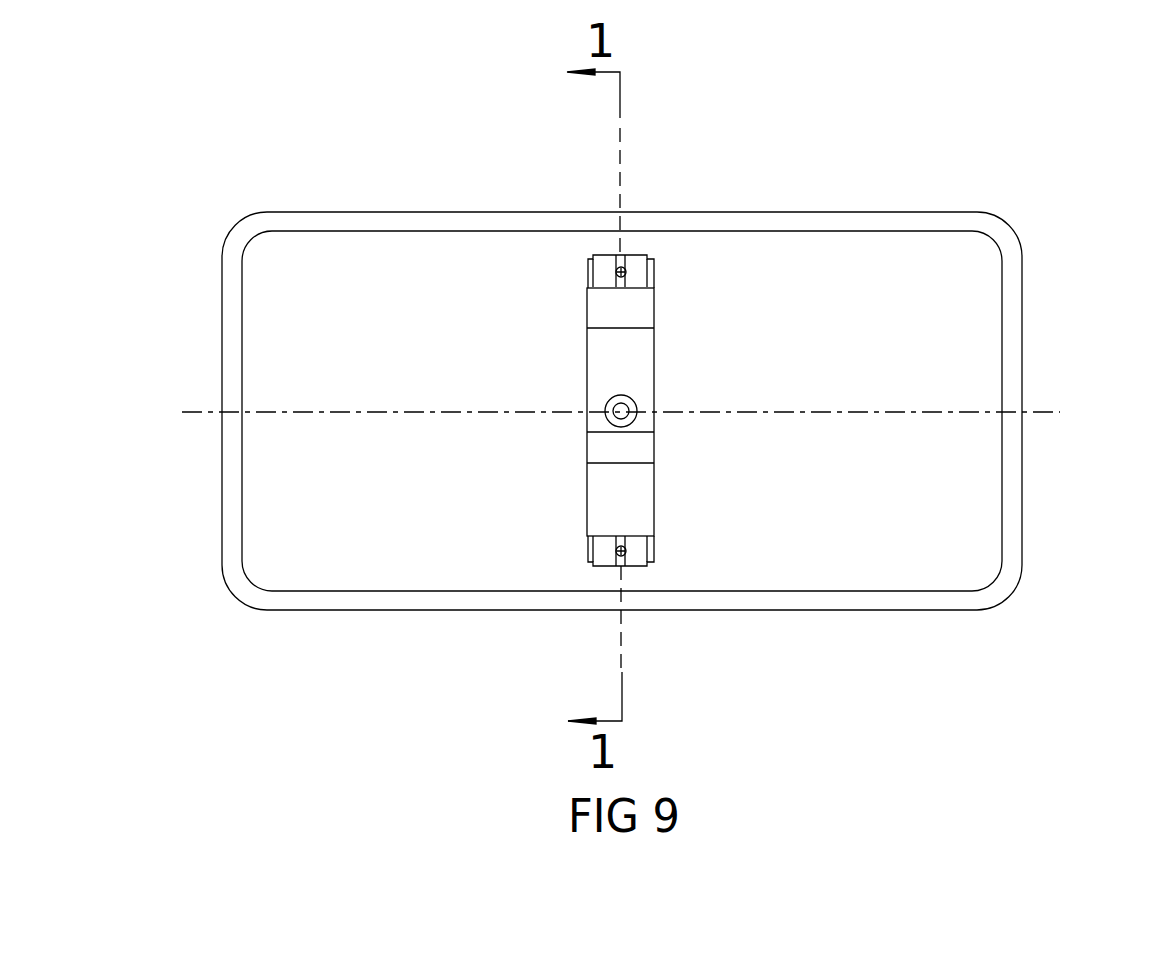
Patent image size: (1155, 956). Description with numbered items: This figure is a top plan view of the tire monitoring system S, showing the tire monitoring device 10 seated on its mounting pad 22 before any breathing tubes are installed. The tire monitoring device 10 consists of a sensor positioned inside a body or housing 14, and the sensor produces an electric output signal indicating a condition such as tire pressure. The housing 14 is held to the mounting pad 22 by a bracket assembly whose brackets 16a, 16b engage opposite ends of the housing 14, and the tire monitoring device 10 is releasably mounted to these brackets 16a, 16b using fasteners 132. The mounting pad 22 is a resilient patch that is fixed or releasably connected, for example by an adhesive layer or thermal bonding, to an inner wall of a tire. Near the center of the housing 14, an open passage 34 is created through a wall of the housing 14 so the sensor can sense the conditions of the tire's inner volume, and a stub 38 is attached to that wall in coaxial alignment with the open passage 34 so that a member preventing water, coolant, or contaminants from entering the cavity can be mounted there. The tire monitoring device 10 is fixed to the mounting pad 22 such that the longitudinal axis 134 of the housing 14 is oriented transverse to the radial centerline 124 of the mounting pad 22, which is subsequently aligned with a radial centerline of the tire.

The tire monitoring device 10 is at (812, 125).
The housing 14 is at (605, 307).
The bracket 16a is at (605, 566).
The bracket 16b is at (657, 302).
The mounting pad 22 is at (767, 580).
The open passage 34 is at (632, 408).
The stub 38 is at (628, 398).
The radial centerline 124 is at (1032, 412).
The fasteners 132 is at (621, 255).
The longitudinal axis 134 is at (620, 118).
The tire monitoring system S is at (223, 612).